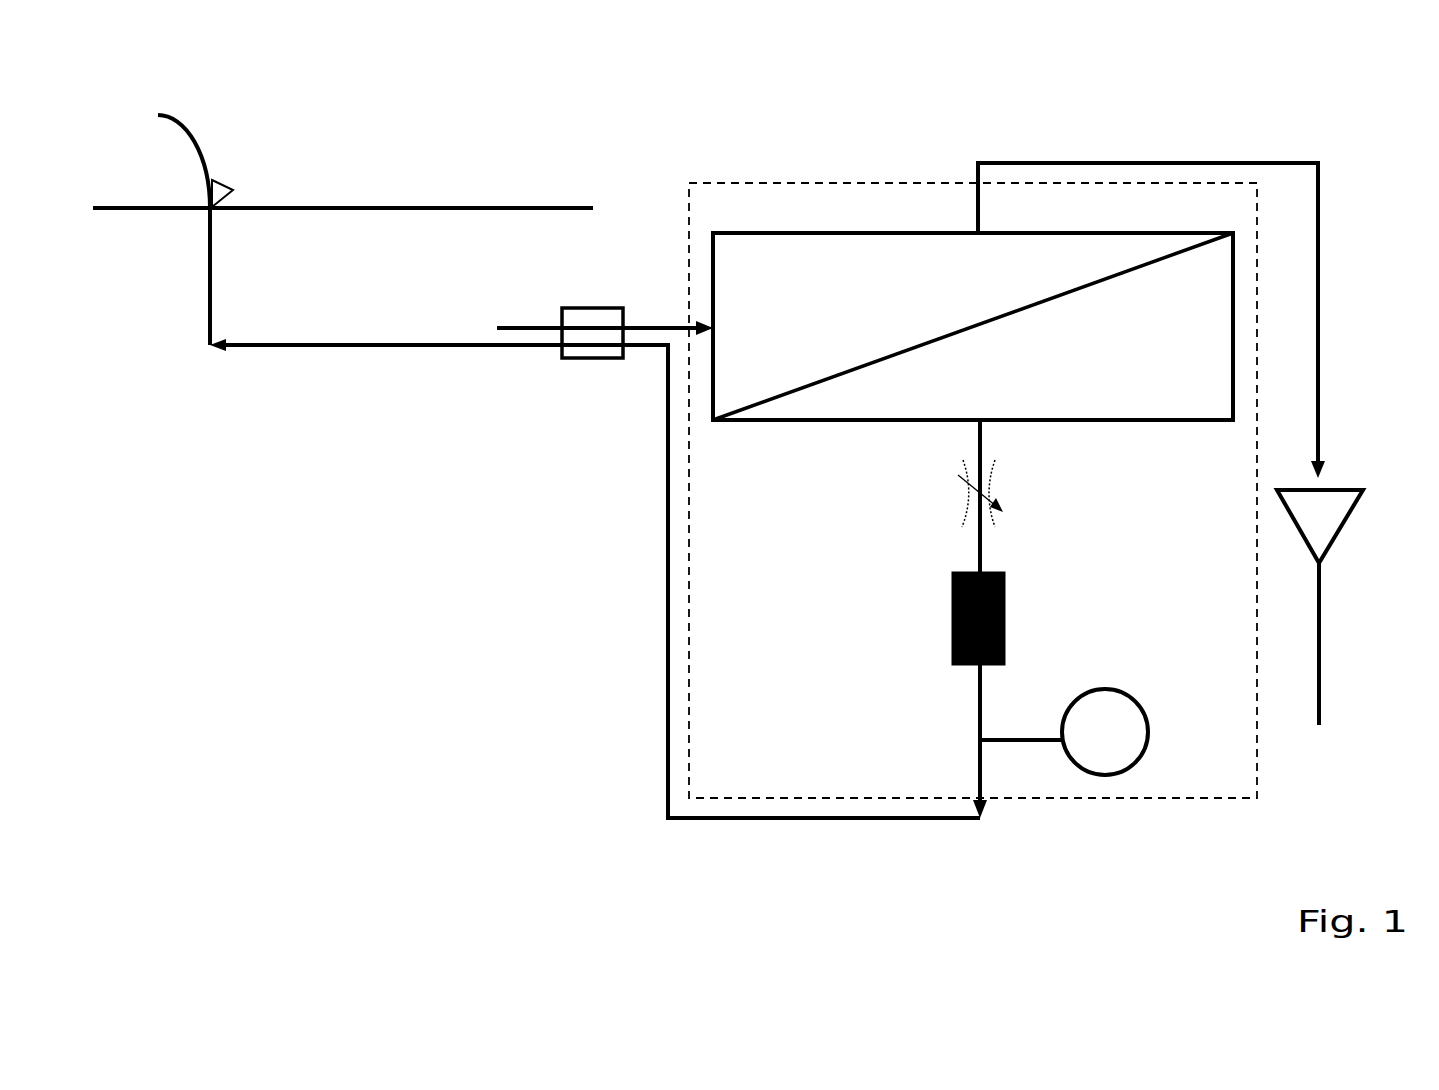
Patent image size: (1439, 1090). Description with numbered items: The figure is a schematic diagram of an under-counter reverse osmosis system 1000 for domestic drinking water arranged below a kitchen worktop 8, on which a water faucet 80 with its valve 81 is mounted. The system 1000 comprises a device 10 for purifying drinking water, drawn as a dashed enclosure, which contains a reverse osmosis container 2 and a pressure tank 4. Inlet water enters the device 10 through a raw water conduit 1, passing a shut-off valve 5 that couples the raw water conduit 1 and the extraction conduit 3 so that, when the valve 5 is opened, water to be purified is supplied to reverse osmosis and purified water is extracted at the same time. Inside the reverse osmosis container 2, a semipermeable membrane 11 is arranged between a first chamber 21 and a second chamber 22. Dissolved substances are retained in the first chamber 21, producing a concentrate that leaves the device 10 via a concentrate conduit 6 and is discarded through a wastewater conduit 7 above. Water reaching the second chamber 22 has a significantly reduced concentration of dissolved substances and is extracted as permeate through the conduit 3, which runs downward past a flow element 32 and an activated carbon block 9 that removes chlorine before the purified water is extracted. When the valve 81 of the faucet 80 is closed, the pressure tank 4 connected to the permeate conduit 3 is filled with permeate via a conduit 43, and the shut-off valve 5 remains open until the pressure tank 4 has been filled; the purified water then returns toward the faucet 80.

The under-counter reverse osmosis system 1000 is at (328, 642).
The raw water conduit 1 is at (512, 318).
The reverse osmosis container 2 is at (840, 230).
The conduit for purified water 3 is at (980, 710).
The pressure tank 4 is at (1116, 751).
The shut-off valve 5 is at (590, 360).
The concentrate conduit 6 is at (1297, 147).
The wastewater conduit 7 is at (1362, 533).
The kitchen worktop 8 is at (450, 198).
The activated carbon block 9 is at (952, 588).
The device for purifying drinking water 10 is at (712, 182).
The semipermeable membrane 11 is at (985, 322).
The first chamber 21 is at (815, 334).
The second chamber 22 is at (1165, 360).
The valve 32 is at (953, 493).
The conduit 43 is at (1023, 740).
The water faucet 80 is at (200, 138).
The valve 81 is at (227, 182).